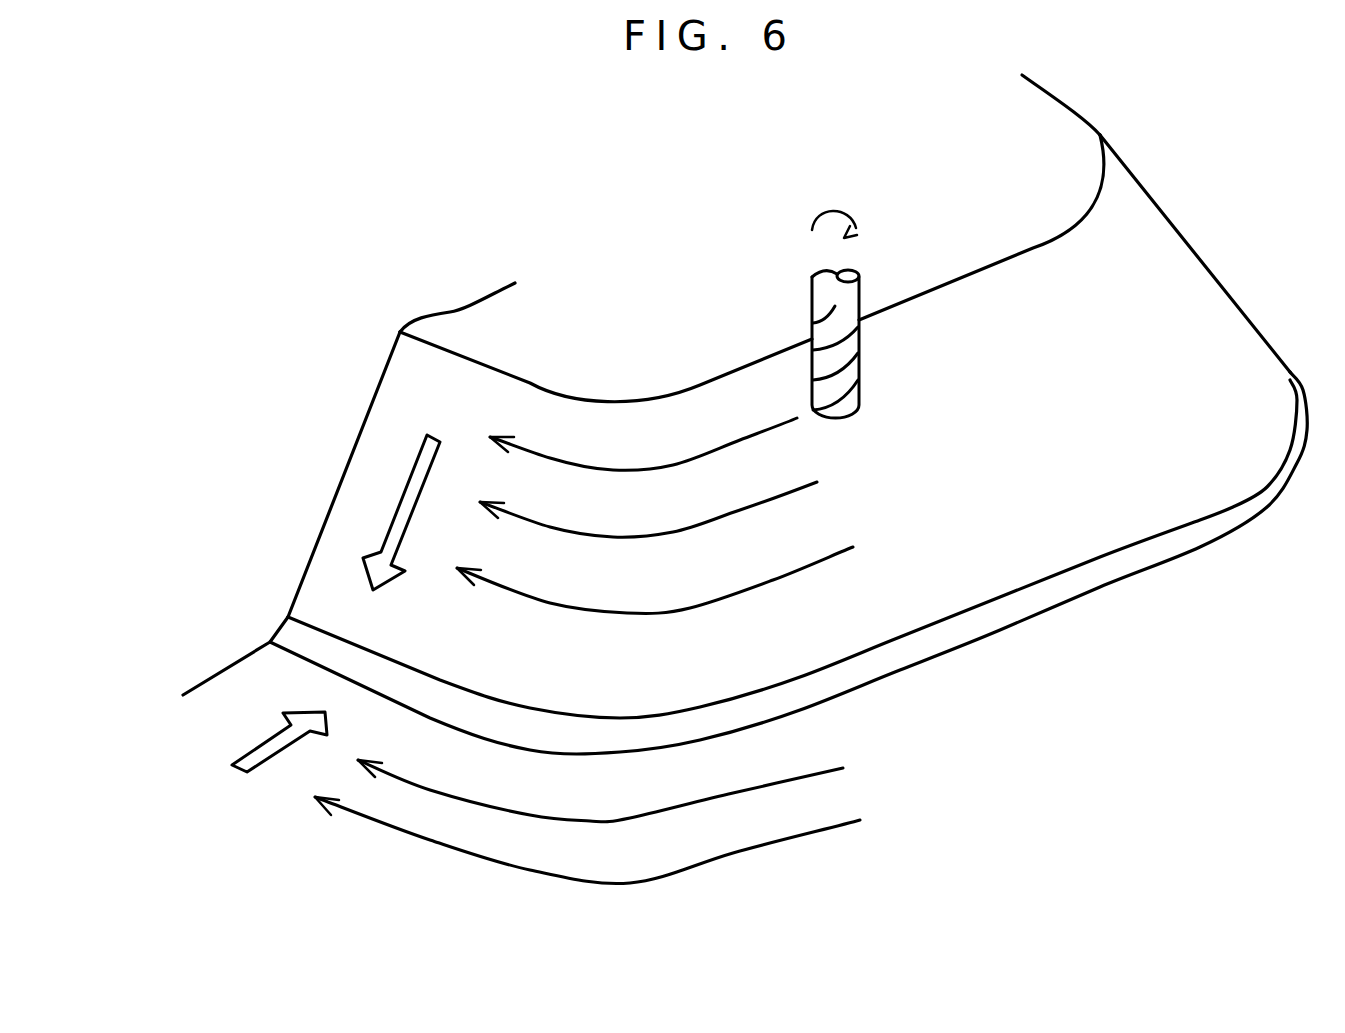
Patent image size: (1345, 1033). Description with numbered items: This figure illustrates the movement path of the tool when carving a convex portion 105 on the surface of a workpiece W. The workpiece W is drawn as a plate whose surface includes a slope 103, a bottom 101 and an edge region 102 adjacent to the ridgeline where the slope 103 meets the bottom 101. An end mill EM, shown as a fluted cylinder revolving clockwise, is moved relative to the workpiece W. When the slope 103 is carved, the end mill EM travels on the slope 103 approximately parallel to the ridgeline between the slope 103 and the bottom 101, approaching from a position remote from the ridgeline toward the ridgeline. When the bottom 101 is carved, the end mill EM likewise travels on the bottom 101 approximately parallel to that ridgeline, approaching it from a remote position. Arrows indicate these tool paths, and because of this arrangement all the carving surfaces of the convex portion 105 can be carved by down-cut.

The bottom 101 is at (222, 693).
The rim flange portion 102 is at (293, 635).
The slope 103 is at (355, 477).
The convex portion 105 is at (1170, 248).
The workpiece W is at (752, 238).
The end mill EM is at (852, 270).